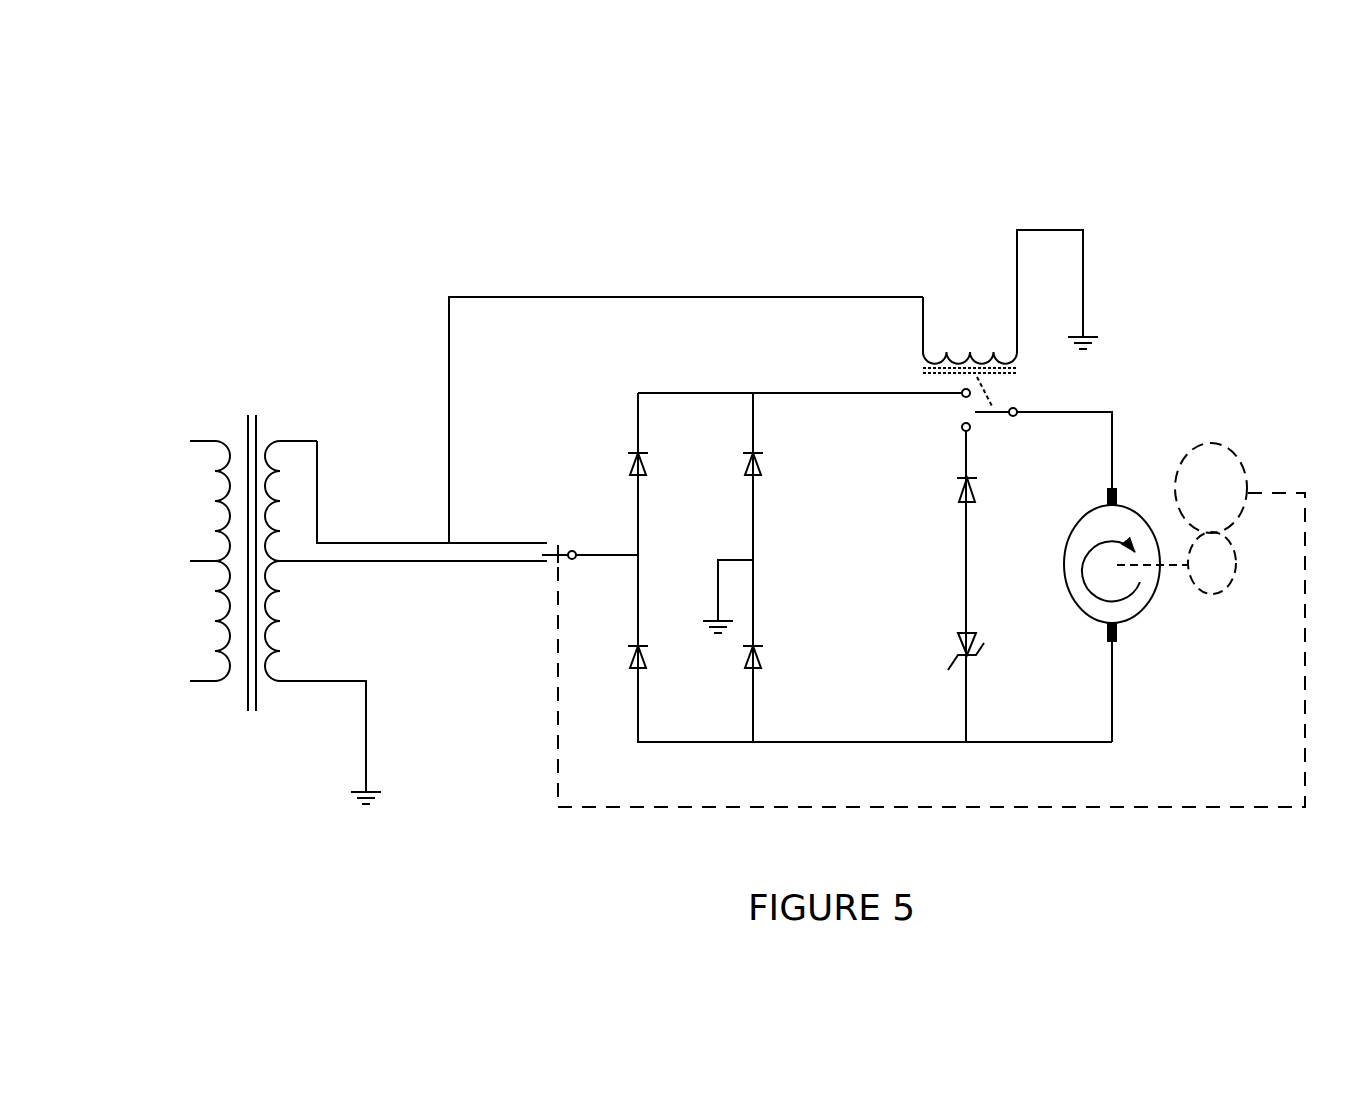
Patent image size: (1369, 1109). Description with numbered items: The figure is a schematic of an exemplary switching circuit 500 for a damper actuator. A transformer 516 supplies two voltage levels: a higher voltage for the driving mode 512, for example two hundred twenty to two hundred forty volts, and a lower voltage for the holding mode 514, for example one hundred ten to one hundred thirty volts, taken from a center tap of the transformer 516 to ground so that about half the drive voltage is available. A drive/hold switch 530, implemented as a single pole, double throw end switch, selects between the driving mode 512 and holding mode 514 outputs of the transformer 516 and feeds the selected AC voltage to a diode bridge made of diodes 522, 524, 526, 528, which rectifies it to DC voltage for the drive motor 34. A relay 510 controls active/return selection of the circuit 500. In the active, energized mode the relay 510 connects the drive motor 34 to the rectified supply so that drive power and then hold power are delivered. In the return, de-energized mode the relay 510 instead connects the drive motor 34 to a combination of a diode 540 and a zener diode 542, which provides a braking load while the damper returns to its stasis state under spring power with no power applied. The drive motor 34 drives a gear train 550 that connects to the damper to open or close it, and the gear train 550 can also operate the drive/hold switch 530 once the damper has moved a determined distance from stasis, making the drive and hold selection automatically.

The switching circuit 500 is at (903, 203).
The relay 510 is at (1057, 393).
The driving mode 512 is at (406, 501).
The holding mode 514 is at (406, 682).
The transformer 516 is at (237, 387).
The diode 522 is at (649, 463).
The diode 524 is at (765, 463).
The diode 526 is at (652, 643).
The diode 528 is at (765, 653).
The drive/hold switch 530 is at (537, 578).
The diode 540 is at (983, 492).
The zener diode 542 is at (983, 655).
The drive motor 34 is at (1153, 593).
The gear train 550 is at (1243, 475).